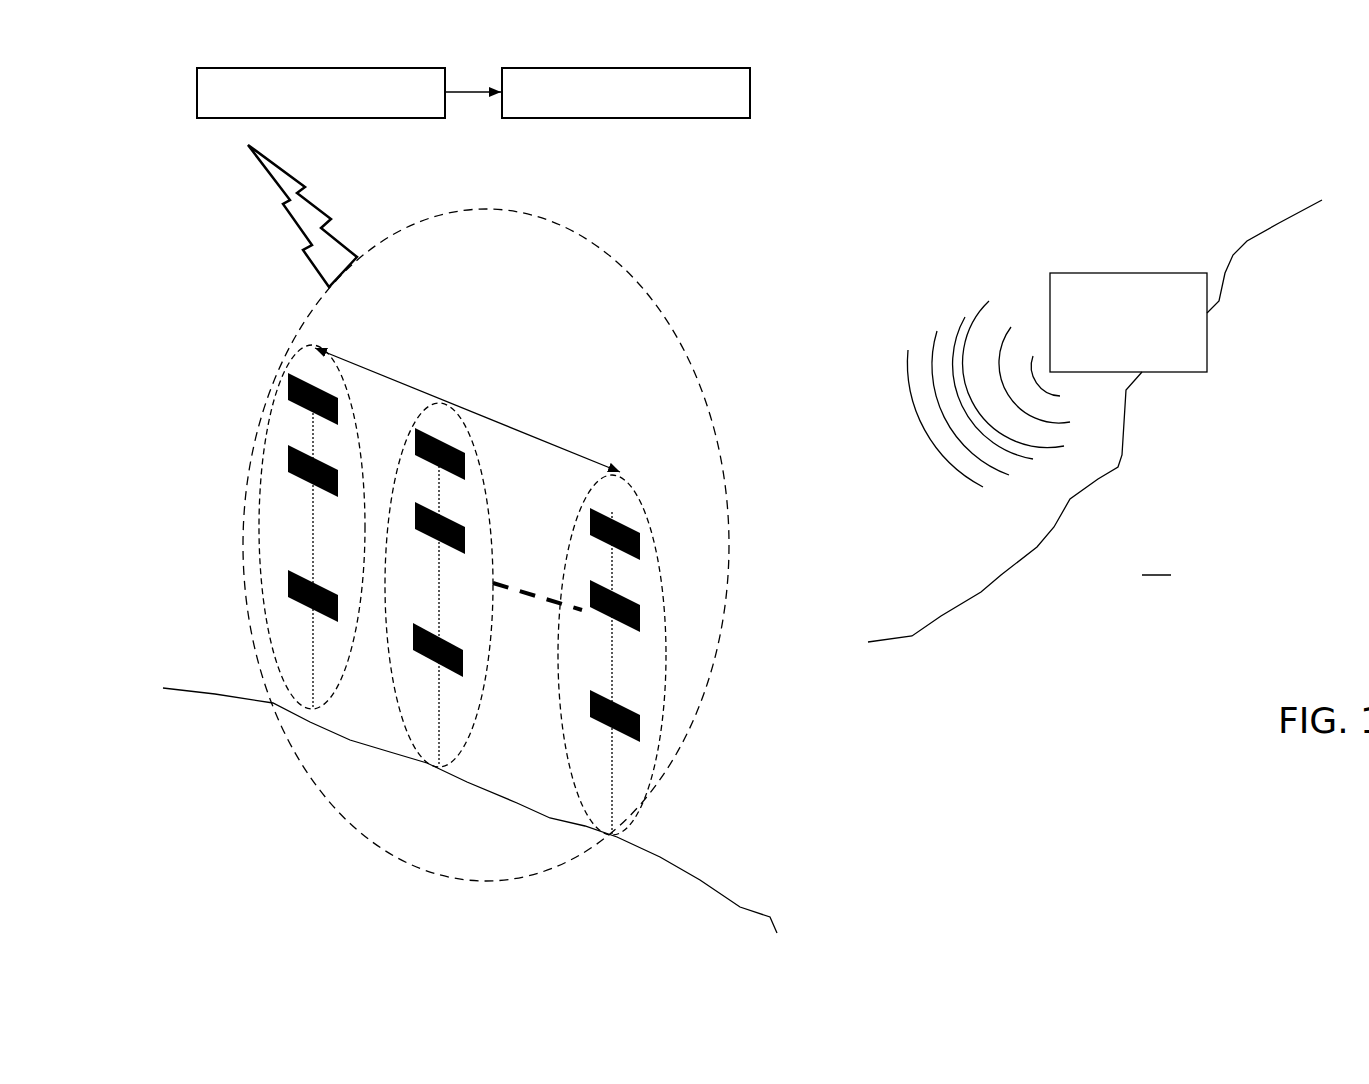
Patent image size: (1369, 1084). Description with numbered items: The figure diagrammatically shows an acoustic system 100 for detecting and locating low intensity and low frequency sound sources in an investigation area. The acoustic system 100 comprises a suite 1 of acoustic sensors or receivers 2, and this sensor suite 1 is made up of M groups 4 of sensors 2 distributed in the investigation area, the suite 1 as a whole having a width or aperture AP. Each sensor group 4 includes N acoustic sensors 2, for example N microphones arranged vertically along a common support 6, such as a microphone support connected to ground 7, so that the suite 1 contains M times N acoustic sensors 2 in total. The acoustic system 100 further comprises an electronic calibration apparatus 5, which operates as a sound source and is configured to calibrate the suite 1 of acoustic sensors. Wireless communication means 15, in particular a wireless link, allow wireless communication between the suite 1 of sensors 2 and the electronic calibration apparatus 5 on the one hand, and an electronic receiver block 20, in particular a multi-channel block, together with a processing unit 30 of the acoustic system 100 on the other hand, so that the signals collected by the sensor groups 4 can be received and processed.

The suite of acoustic sensors 1 is at (709, 403).
The acoustic sensor 2 is at (290, 400).
The sensor group 4 is at (410, 425).
The electronic calibration apparatus 5 is at (1128, 271).
The common support 6 is at (310, 534).
The ground 7 is at (737, 893).
The wireless communication means 15 is at (279, 211).
The electronic receiver block 20 is at (271, 119).
The processing unit 30 is at (636, 118).
The acoustic system 100 is at (1022, 718).
The aperture AP is at (520, 425).